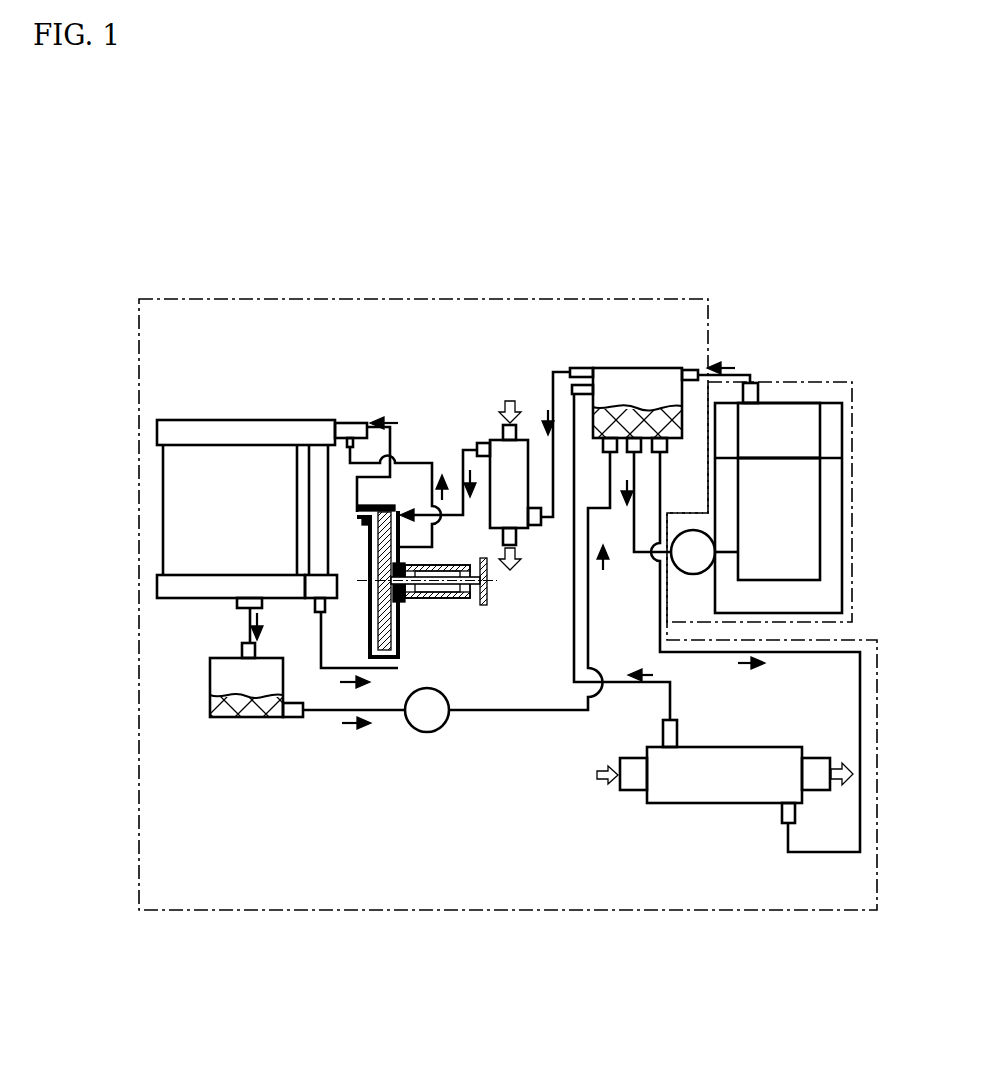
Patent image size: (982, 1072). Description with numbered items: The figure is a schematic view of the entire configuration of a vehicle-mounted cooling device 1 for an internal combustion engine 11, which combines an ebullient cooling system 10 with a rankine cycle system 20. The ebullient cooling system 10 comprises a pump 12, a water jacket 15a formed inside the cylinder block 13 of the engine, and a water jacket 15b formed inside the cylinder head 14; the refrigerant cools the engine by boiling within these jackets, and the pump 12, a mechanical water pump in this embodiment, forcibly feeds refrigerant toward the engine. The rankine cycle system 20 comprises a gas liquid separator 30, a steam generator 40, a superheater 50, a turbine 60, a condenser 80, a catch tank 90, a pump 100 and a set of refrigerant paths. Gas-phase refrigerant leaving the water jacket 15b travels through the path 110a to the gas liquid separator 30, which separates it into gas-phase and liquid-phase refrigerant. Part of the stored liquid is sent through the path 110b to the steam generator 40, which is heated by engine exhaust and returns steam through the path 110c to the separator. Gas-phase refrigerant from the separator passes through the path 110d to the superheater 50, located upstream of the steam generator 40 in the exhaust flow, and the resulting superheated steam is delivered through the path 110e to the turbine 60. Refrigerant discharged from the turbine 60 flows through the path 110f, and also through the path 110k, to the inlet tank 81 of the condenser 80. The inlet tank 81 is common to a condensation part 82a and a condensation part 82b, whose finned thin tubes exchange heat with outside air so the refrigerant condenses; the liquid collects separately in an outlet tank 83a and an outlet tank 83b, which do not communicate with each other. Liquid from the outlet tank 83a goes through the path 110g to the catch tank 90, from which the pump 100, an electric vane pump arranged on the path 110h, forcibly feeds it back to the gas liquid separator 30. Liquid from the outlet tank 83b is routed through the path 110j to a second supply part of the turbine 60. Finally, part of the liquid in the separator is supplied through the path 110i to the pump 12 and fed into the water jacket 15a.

The cooling device 1 is at (825, 208).
The ebullient cooling system 10 is at (782, 466).
The internal combustion engine 11 is at (846, 392).
The pump 12 is at (693, 530).
The cylinder block 13 is at (846, 590).
The cylinder head 14 is at (846, 407).
The water jacket 15a is at (800, 553).
The water jacket 15b is at (800, 450).
The rankine cycle system 20 is at (435, 297).
The gas liquid separator 30 is at (634, 368).
The steam generator 40 is at (713, 803).
The superheater 50 is at (489, 441).
The turbine 60 is at (478, 620).
The condenser 80 is at (255, 493).
The inlet tank 81 is at (253, 427).
The condensation part 82a is at (218, 463).
The condensation part 82b is at (322, 465).
The outlet tank 83a is at (200, 590).
The outlet tank 83b is at (315, 590).
The catch tank 90 is at (210, 682).
The pump 100 is at (427, 732).
The path 110a is at (745, 374).
The path 110b is at (797, 652).
The path 110c is at (672, 695).
The path 110d is at (554, 372).
The path 110e is at (461, 452).
The path 110f is at (391, 443).
The path 110g is at (247, 628).
The path 110h is at (329, 712).
The path 110i is at (631, 542).
The path 110j is at (385, 670).
The path 110k is at (428, 472).